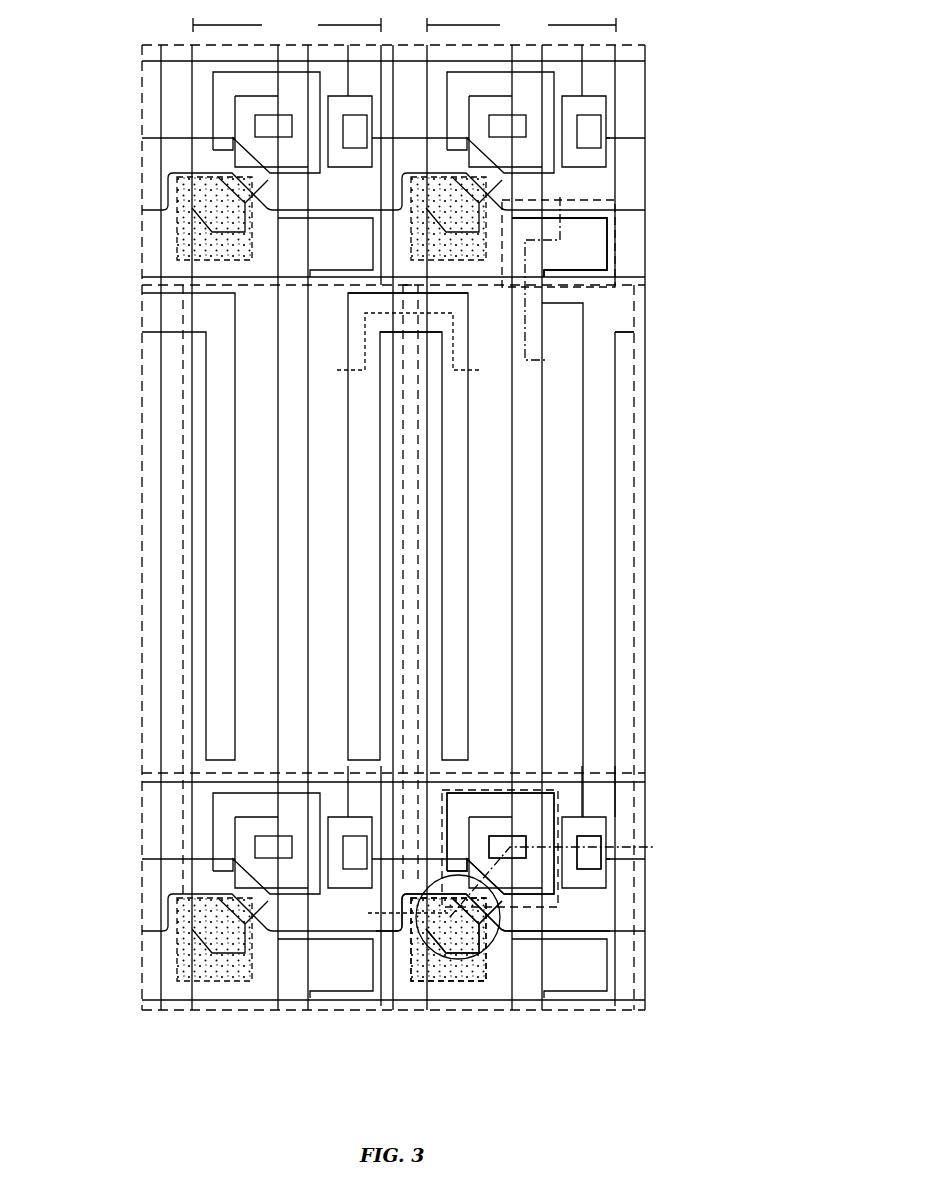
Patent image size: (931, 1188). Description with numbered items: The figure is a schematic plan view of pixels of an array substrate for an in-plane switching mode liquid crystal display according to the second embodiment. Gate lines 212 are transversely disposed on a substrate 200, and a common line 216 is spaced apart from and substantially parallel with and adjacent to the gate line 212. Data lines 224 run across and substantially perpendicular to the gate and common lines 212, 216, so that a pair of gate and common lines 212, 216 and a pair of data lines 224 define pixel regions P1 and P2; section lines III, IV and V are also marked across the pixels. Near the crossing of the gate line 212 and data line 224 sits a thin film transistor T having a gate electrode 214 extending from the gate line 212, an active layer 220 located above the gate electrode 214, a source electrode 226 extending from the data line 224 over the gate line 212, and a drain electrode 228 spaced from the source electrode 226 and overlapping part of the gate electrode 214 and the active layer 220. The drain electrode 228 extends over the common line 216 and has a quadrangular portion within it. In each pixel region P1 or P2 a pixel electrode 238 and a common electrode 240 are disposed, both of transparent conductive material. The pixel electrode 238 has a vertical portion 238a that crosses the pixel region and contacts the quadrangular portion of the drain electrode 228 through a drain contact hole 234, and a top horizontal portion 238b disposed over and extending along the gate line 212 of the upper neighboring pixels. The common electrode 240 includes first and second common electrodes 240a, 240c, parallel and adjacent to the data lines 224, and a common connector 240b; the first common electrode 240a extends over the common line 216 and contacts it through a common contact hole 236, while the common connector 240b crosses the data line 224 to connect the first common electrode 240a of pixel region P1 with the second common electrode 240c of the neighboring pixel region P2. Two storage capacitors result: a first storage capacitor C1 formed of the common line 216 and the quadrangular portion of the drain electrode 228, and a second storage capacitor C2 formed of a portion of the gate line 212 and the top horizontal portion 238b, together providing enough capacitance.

The substrate 200 is at (645, 470).
The gate line 212 is at (627, 202).
The gate electrode 214 is at (457, 903).
The common line 216 is at (605, 778).
The active layer 220 is at (414, 1010).
The data line 224 is at (390, 477).
The source electrode 226 is at (460, 982).
The drain electrode 228 is at (502, 975).
The drain contact hole 234 is at (526, 842).
The common contact hole 236 is at (601, 843).
The pixel electrode 238 is at (744, 232).
The vertical portion 238a is at (545, 300).
The top horizontal portion 238b is at (607, 238).
The common electrode 240 is at (761, 297).
The first common electrode 240a is at (345, 548).
The common connector 240b is at (455, 318).
The second common electrode 240c is at (455, 350).
The first storage capacitor C1 is at (547, 905).
The second storage capacitor C2 is at (617, 218).
The thin film transistor T is at (497, 942).
The pixel region P1 is at (92, 527).
The pixel region P2 is at (700, 506).
The section line III- III is at (510, 879).
The section line IV- IV is at (550, 278).
The section line V- V is at (409, 347).